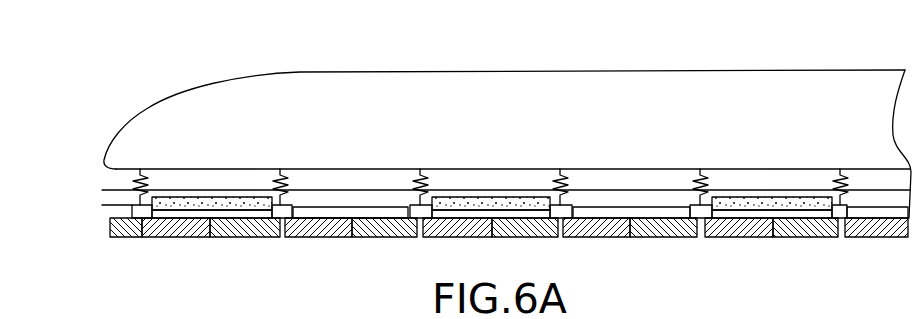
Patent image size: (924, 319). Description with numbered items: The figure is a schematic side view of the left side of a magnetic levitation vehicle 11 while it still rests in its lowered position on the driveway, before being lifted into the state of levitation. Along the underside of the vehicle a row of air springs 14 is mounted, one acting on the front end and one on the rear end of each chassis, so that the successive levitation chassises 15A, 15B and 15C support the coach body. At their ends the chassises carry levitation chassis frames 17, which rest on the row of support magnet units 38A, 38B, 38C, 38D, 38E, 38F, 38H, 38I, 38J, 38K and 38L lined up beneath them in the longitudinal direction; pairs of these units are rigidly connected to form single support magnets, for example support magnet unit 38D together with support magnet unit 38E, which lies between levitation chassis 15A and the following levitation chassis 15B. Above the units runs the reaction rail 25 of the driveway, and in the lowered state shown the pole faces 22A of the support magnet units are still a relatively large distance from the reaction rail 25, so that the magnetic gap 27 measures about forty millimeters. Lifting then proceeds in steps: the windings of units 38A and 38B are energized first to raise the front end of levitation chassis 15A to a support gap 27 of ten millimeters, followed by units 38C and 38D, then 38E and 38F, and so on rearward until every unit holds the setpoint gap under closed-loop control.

The magnetic levitation vehicle 11 is at (814, 69).
The air spring 14 is at (280, 171).
The levitation chassis 15A is at (218, 198).
The levitation chassis 15B is at (500, 200).
The third sensor element 15C is at (768, 197).
The levitation chassis frame 17 is at (120, 213).
The pole face 22A is at (620, 215).
The reaction rail 25 is at (347, 200).
The magnetic gap 27 is at (372, 210).
The support magnet unit 38A is at (124, 238).
The support magnet unit 38B is at (185, 238).
The support magnet unit 38C is at (247, 238).
The support magnet unit 38D is at (317, 238).
The support magnet unit 38E is at (388, 238).
The support magnet unit 38F is at (458, 238).
The support magnet unit 38H is at (607, 238).
The electrode segment 38I is at (677, 238).
The electrode segment 38J is at (743, 238).
The electrode segment 38K is at (807, 238).
The electrode segment 38L is at (883, 238).